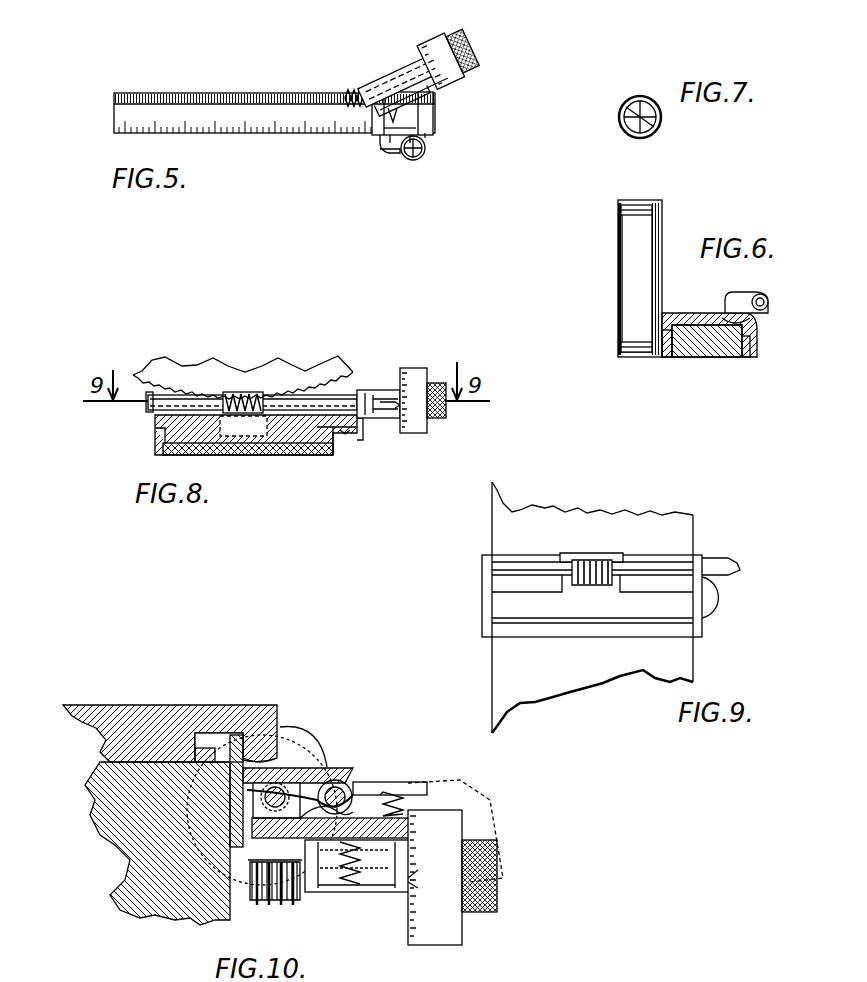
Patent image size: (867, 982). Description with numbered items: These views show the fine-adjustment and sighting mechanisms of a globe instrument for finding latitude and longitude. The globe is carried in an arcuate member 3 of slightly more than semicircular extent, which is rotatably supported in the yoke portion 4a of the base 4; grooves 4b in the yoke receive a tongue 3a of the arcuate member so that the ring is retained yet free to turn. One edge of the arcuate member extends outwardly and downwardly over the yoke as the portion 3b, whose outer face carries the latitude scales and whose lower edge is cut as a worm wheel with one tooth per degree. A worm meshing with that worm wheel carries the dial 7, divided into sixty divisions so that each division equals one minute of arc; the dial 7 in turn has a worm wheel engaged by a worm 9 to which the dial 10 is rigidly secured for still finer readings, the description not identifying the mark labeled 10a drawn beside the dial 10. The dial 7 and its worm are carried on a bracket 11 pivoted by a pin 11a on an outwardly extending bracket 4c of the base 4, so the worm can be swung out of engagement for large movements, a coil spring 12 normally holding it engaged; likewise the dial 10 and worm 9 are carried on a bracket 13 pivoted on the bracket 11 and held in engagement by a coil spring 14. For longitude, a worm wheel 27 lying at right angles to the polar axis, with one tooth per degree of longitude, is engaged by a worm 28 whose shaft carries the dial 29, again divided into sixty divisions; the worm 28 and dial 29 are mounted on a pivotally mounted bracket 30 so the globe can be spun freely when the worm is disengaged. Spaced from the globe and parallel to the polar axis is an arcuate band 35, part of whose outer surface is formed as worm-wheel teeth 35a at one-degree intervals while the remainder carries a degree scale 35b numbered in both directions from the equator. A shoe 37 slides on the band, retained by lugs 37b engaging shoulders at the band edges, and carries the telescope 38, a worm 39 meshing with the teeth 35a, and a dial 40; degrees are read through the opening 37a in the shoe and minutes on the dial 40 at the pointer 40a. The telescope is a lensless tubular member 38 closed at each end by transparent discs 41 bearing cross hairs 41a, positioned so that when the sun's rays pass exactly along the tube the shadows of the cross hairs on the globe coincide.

In FIG. 8, the arcuate member 3 is at (280, 432).
In FIG. 9, the arcuate member 3 is at (668, 672).
In FIG. 10, the arcuate member 3 is at (150, 715).
In FIG. 8, the tongue 3a is at (330, 448).
In FIG. 10, the tongue 3a is at (204, 752).
In FIG. 8, the outwardly and downwardly extending portion 3b is at (360, 433).
In FIG. 10, the outwardly and downwardly extending portion 3b is at (300, 748).
In FIG. 10, the base 4 is at (130, 875).
In FIG. 8, the yoke portion 4a is at (163, 452).
In FIG. 8, the grooves 4b is at (158, 436).
In FIG. 10, the grooves 4b is at (245, 740).
In FIG. 10, the outwardly extending bracket 4c is at (320, 775).
In FIG. 10, the dial 7 is at (270, 750).
In FIG. 10, the worm 9 is at (290, 898).
In FIG. 10, the dial 10 is at (448, 918).
In FIG. 10, the barrel index 10a is at (412, 878).
In FIG. 10, the bracket 11 is at (350, 800).
In FIG. 10, the pin 11a is at (392, 800).
In FIG. 10, the coil spring 12 is at (400, 790).
In FIG. 10, the bracket 13 is at (368, 885).
In FIG. 10, the coil spring 14 is at (420, 828).
In FIG. 8, the worm wheel 27 is at (320, 372).
In FIG. 8, the worm 28 is at (258, 394).
In FIG. 9, the worm 28 is at (604, 556).
In FIG. 8, the dial 29 is at (418, 368).
In FIG. 8, the pivotally mounted bracket 30 is at (148, 403).
In FIG. 9, the pivotally mounted bracket 30 is at (680, 605).
In FIG. 5, the arcuate band 35 is at (274, 105).
In FIG. 6, the arcuate band 35 is at (718, 345).
In FIG. 5, the teeth 35a is at (290, 94).
In FIG. 5, the scale 35b is at (290, 126).
In FIG. 6, the scale 35b is at (758, 335).
In FIG. 5, the shoe 37 is at (438, 118).
In FIG. 6, the shoe 37 is at (760, 352).
In FIG. 5, the opening 37a is at (384, 128).
In FIG. 6, the lugs 37b is at (672, 357).
In FIG. 5, the telescope 38 is at (404, 158).
In FIG. 7, the telescope 38 is at (627, 131).
In FIG. 6, the telescope 38 is at (632, 270).
In FIG. 5, the worm 39 is at (355, 88).
In FIG. 5, the dial 40 is at (460, 45).
In FIG. 5, the pointer 40a is at (460, 84).
In FIG. 7, the transparent discs 41 is at (645, 104).
In FIG. 6, the transparent discs 41 is at (648, 205).
In FIG. 7, the cross hairs 41a is at (654, 128).